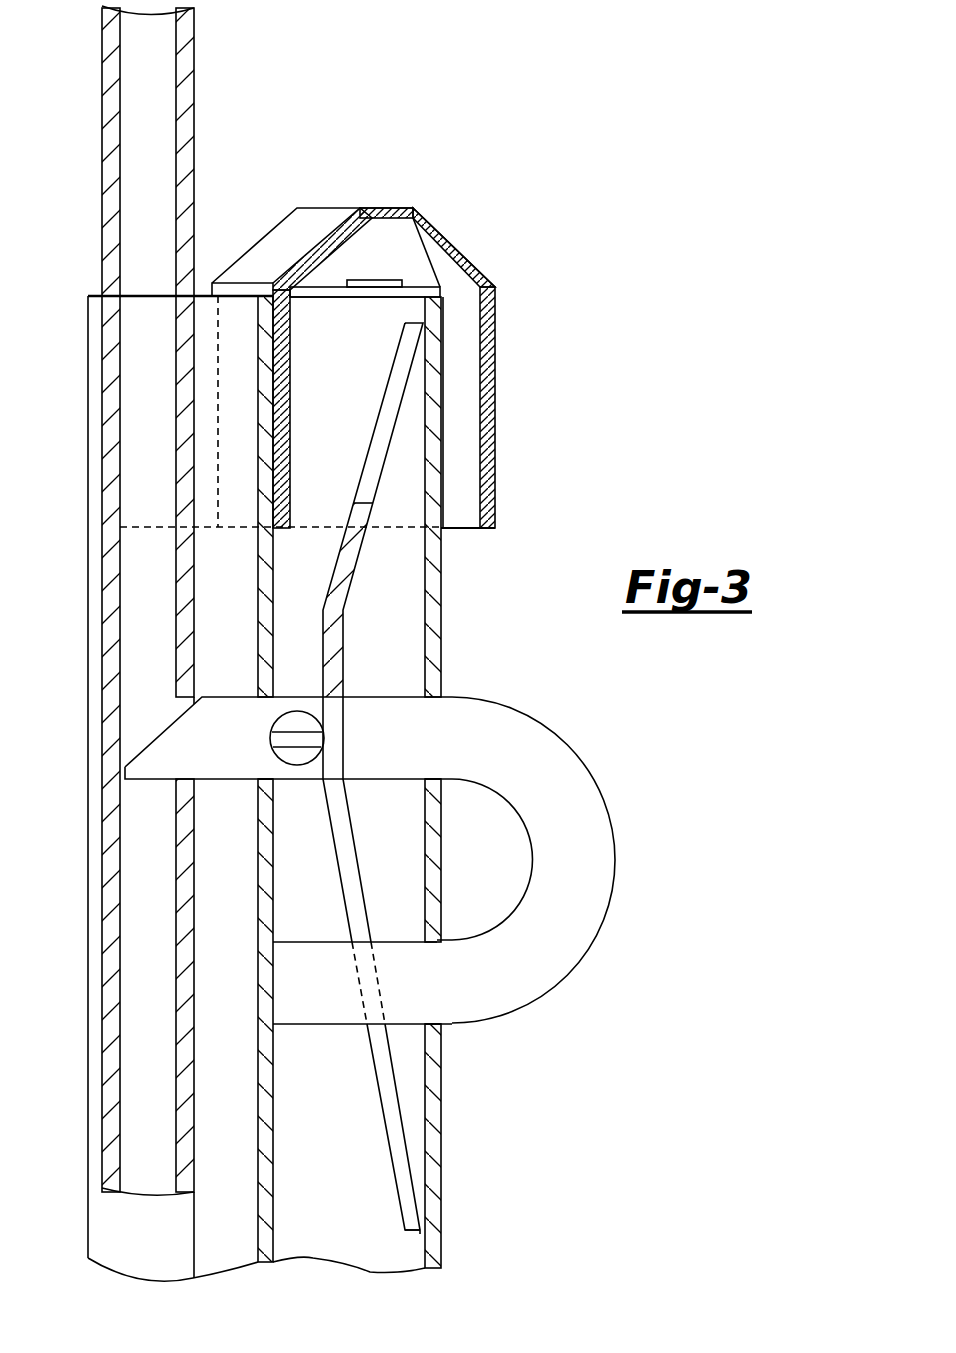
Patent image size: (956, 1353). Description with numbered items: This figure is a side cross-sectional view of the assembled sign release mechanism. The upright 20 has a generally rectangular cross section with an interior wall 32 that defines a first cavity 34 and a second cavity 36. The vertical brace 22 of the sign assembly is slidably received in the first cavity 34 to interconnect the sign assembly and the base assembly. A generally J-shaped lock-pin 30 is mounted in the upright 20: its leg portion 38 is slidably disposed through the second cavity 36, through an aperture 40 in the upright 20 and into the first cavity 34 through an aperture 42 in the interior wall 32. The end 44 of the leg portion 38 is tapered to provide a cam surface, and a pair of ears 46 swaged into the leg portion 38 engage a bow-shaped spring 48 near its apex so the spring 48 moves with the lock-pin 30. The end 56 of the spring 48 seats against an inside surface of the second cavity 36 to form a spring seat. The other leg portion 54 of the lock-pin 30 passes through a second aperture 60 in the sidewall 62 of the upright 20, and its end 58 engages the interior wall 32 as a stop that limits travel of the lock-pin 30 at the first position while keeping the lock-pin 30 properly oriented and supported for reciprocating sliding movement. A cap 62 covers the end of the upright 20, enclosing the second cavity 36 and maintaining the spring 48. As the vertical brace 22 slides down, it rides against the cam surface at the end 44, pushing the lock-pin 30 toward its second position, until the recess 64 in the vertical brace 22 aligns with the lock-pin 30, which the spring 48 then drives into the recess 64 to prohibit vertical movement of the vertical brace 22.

The upright 20 is at (437, 660).
The vertical brace 22 is at (108, 128).
The lock-pin 30 is at (602, 860).
The interior wall 32 is at (263, 1228).
The first cavity 34 is at (163, 1252).
The second cavity 36 is at (356, 1217).
The leg portion 38 is at (360, 768).
The aperture 40 is at (432, 778).
The aperture 42 is at (270, 778).
The end 44 is at (165, 733).
The ears 46 is at (287, 765).
The spring 48 is at (328, 660).
The leg portion 54 is at (420, 326).
The end 56 is at (410, 1233).
The end 58 is at (265, 1015).
The second aperture 60 is at (433, 1023).
The cap 62 is at (318, 215).
The recess 64 is at (187, 702).